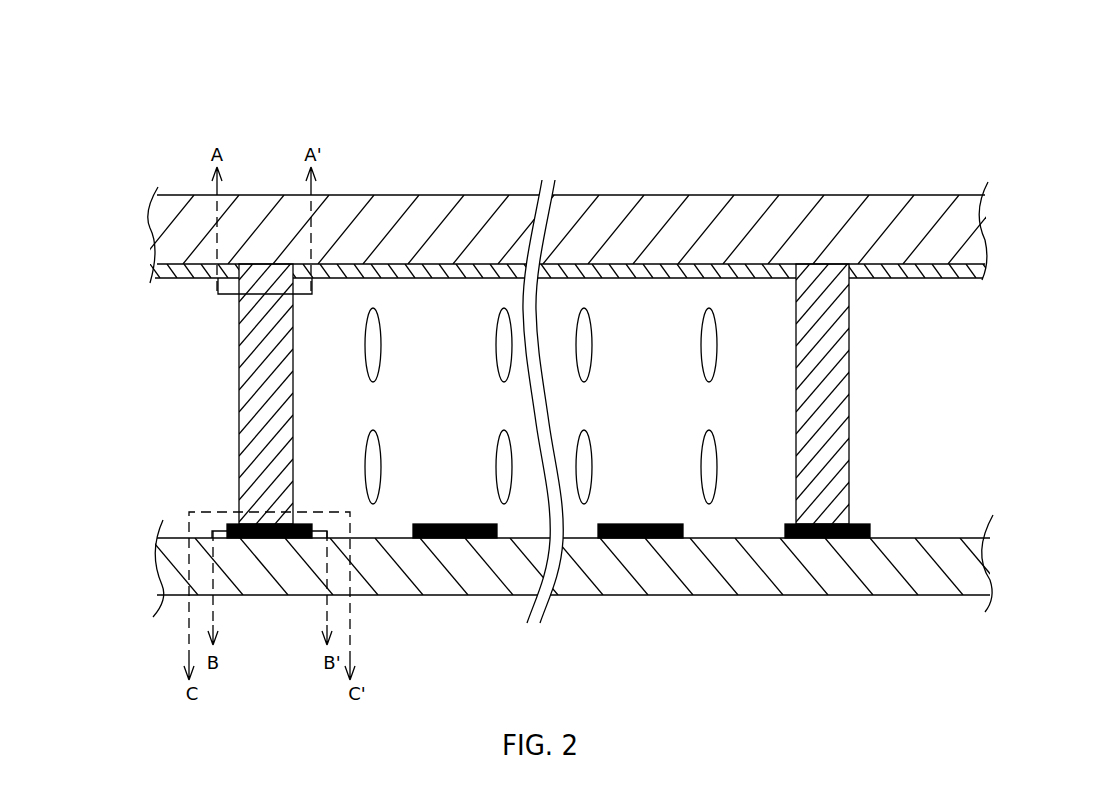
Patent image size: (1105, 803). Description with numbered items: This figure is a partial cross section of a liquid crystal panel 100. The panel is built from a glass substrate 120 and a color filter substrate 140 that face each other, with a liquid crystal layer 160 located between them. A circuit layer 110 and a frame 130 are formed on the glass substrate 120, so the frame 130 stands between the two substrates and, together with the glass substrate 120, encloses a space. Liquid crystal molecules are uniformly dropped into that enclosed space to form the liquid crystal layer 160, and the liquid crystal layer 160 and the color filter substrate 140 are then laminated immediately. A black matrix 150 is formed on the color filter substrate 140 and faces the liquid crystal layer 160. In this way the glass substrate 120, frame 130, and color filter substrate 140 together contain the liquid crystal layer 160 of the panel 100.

The liquid crystal panel 100 is at (145, 114).
The circuit layer 110 is at (762, 268).
The glass substrate 120 is at (958, 218).
The frame 130 is at (257, 386).
The color filter substrate 140 is at (962, 563).
The black matrix 150 is at (818, 555).
The liquid crystal layer 160 is at (683, 463).